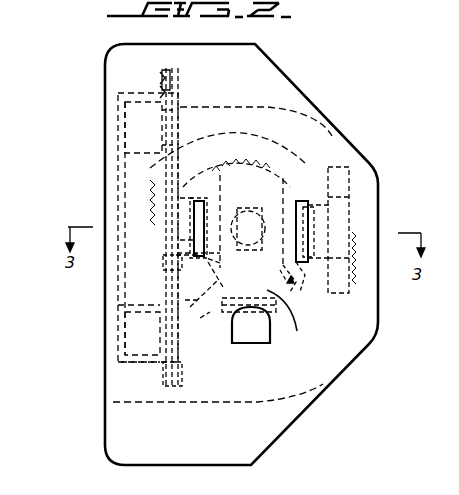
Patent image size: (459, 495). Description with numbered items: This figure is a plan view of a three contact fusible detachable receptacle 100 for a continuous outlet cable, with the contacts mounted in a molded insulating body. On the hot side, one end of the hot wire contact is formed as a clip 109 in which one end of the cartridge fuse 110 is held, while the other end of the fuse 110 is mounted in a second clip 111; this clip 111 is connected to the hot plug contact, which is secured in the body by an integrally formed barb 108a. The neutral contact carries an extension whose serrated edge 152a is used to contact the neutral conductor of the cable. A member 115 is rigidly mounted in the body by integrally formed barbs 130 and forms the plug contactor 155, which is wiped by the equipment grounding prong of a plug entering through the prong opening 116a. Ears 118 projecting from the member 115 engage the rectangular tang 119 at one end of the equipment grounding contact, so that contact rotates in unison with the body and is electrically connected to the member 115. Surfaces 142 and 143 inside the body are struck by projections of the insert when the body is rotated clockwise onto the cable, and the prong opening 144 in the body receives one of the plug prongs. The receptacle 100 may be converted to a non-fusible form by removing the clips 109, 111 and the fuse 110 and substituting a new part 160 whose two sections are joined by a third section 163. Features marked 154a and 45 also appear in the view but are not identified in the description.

The fused detachable receptacle 100 is at (333, 119).
The clip 109 is at (118, 135).
The cartridge fuse 110 is at (125, 192).
The clip 111 is at (133, 330).
The member 115 is at (287, 198).
The prong opening 116a is at (240, 345).
The ears 118 is at (268, 213).
The rectangular tang 119 is at (276, 276).
The barbs 130 is at (284, 162).
The surface 142 is at (199, 317).
The surface 143 is at (302, 180).
The prong opening 144 is at (217, 270).
The serrated edge 152a is at (357, 237).
The spring 154a is at (150, 218).
The plug contactor 155 is at (300, 323).
The new part 160 is at (172, 128).
The third section 163 is at (178, 148).
The connector 45 is at (302, 271).
The barb 108a is at (160, 273).